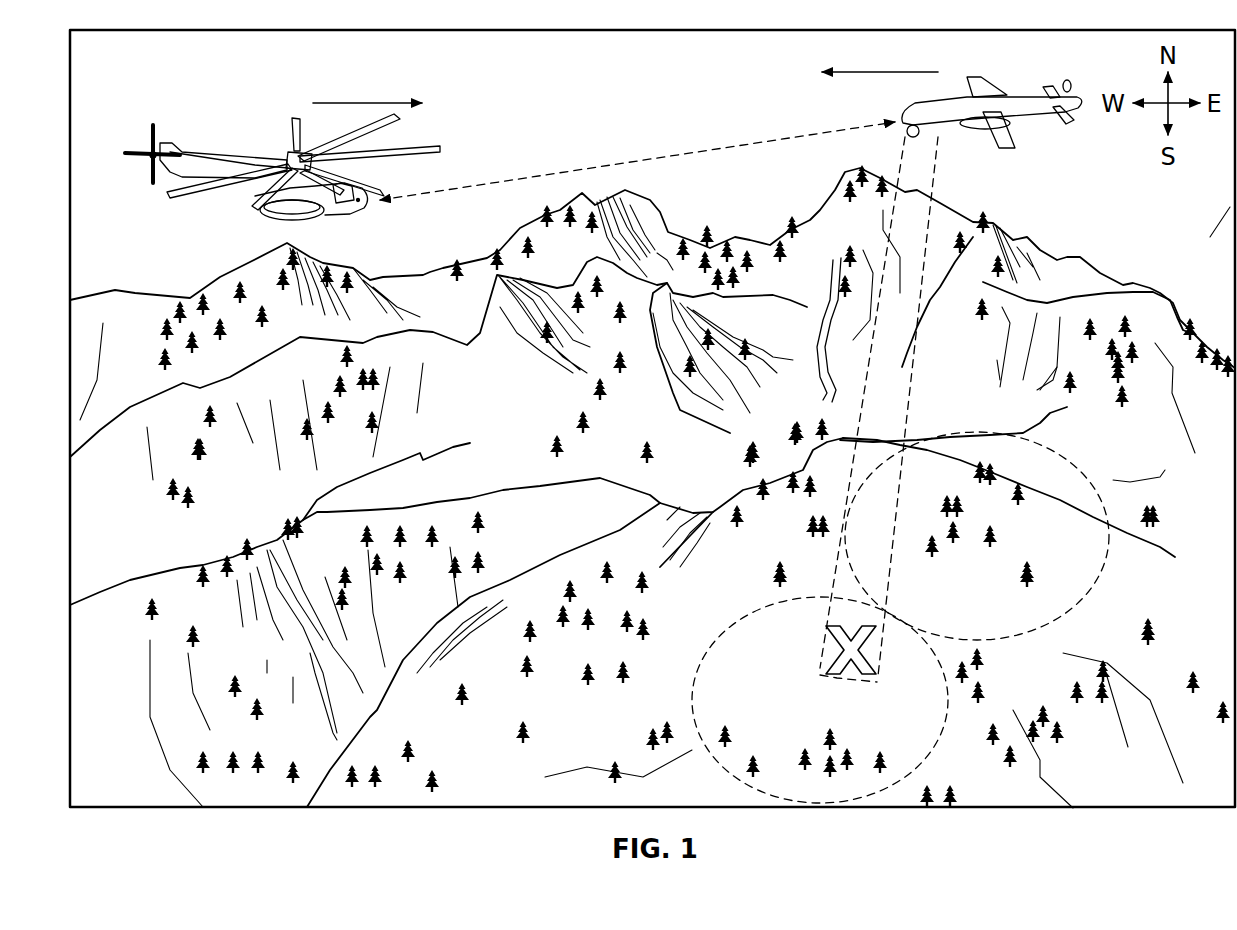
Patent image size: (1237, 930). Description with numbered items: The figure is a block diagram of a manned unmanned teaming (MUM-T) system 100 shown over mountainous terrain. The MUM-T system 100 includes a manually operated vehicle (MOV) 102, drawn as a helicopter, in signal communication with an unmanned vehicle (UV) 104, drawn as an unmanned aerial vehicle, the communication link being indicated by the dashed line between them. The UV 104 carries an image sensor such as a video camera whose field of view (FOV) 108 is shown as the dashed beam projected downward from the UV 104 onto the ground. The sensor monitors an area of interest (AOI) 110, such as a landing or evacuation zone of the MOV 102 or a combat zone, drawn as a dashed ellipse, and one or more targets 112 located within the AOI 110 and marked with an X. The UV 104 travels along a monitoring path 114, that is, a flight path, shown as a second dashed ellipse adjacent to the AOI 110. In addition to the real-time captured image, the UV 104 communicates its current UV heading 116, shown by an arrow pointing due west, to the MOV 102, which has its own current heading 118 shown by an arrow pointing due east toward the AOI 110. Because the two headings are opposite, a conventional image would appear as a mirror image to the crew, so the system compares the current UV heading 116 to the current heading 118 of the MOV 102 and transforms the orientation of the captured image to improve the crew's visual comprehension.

The manned unmanned teaming (MUM-T) system 100 is at (255, 85).
The manually operated vehicle (MOV) 102 is at (220, 207).
The unmanned vehicle (UV) 104 is at (1030, 140).
The field of view (FOV) 108 is at (907, 403).
The area of interest (AOI) 110 is at (752, 610).
The target 112 is at (833, 673).
The monitoring path 114 is at (1067, 447).
The current UV heading 116 is at (903, 70).
The current heading 118 is at (347, 102).